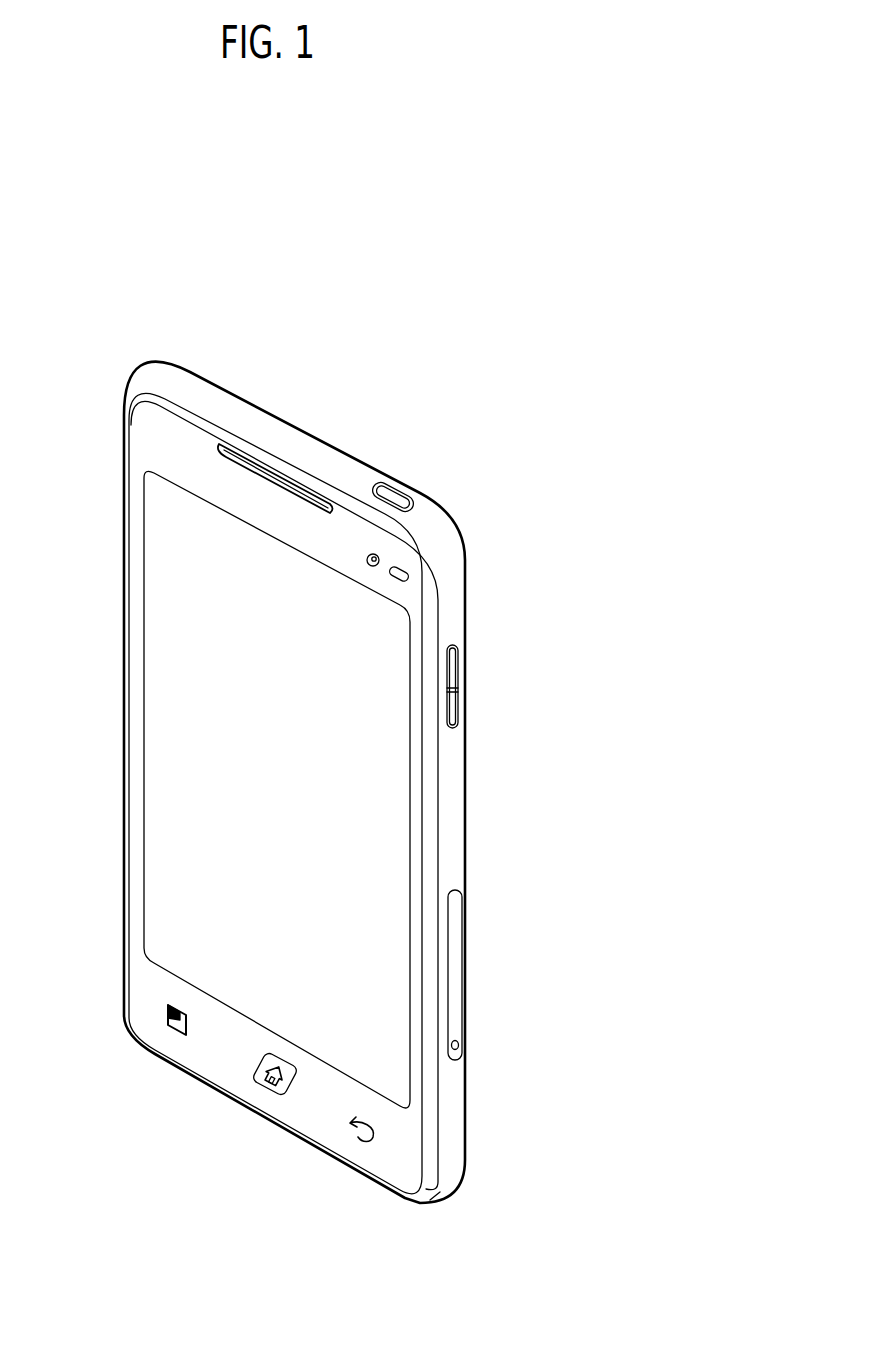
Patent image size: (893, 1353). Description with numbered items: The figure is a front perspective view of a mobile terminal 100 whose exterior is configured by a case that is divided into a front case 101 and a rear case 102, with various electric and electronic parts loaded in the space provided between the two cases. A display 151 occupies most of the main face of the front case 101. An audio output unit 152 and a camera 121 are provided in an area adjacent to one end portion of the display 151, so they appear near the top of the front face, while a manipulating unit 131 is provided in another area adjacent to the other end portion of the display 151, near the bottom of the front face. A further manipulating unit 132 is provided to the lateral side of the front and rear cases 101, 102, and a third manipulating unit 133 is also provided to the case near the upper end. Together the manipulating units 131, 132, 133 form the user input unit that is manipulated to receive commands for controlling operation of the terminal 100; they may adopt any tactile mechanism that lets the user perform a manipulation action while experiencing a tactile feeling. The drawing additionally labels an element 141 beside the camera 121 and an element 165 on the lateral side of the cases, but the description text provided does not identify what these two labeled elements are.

The mobile terminal 100 is at (437, 329).
The front case 101 is at (430, 1144).
The rear case 102 is at (454, 552).
The camera 121 is at (381, 560).
The manipulating unit 131 is at (266, 1085).
The manipulating unit 132 is at (455, 682).
The manipulating unit 133 is at (393, 496).
The sensing unit / proximity sensor 141 is at (406, 578).
The display 151 is at (163, 750).
The audio output unit 152 is at (272, 472).
The interface unit 165 is at (455, 976).